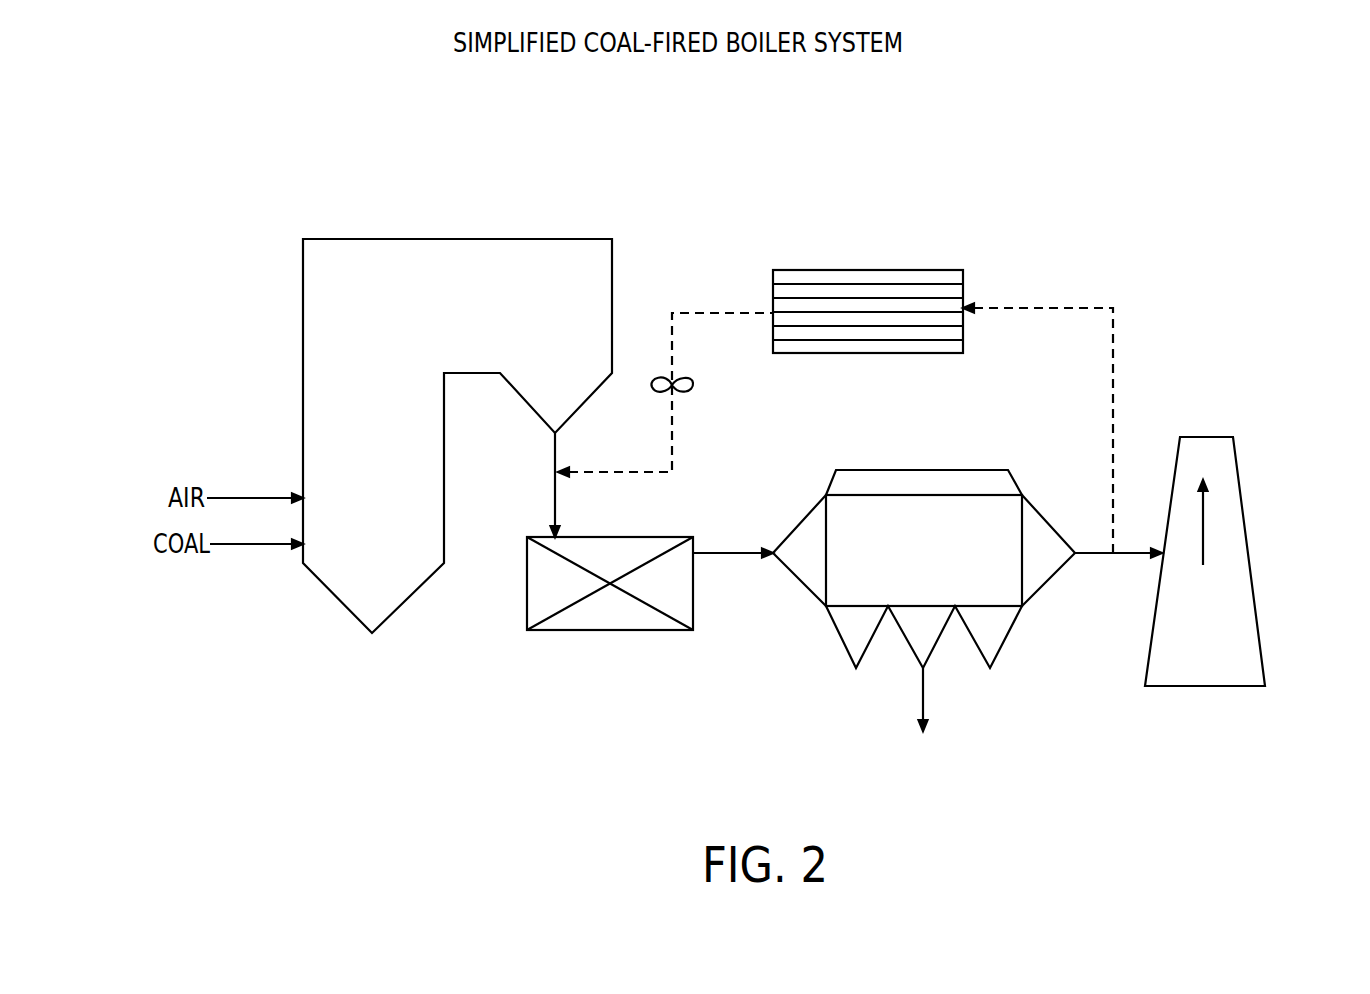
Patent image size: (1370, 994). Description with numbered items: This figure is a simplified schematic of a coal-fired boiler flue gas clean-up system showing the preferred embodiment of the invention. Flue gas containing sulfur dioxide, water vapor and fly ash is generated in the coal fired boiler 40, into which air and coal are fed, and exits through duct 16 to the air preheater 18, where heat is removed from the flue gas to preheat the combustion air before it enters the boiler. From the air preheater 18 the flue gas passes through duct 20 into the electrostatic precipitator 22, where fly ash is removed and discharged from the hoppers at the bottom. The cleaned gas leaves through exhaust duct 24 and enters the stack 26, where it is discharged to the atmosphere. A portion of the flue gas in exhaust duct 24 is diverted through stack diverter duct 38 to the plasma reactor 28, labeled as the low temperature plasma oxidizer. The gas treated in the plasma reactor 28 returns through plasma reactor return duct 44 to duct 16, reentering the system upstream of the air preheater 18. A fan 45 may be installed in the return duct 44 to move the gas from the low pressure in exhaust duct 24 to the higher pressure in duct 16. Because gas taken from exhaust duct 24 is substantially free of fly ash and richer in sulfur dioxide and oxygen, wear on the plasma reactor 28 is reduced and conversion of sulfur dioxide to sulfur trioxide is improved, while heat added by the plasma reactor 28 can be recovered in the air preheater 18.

The coal fired boiler 40 is at (555, 239).
The duct 16 is at (552, 473).
The plasma reactor return duct 44 is at (729, 313).
The fan 45 is at (670, 383).
The air preheater 18 is at (531, 633).
The duct 20 is at (733, 553).
The electrostatic precipitator 22 is at (1008, 470).
The exhaust duct 24 is at (1103, 553).
The exhaust stack 26 is at (1257, 601).
The plasma reactor 28 is at (974, 285).
The stack diverter duct 38 is at (1115, 343).